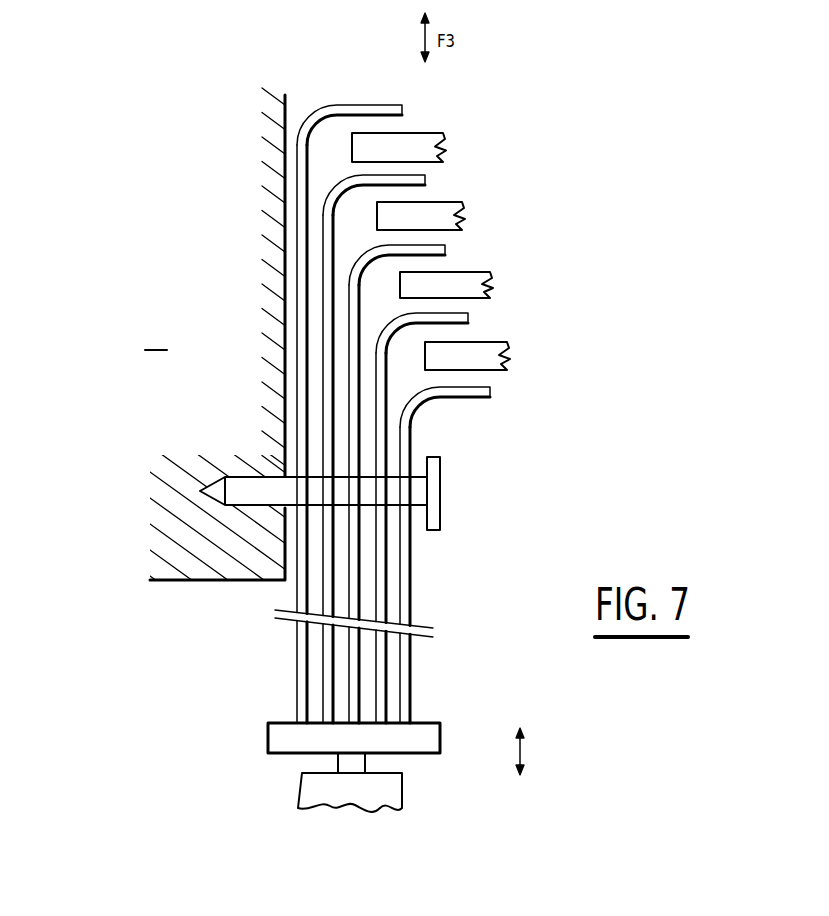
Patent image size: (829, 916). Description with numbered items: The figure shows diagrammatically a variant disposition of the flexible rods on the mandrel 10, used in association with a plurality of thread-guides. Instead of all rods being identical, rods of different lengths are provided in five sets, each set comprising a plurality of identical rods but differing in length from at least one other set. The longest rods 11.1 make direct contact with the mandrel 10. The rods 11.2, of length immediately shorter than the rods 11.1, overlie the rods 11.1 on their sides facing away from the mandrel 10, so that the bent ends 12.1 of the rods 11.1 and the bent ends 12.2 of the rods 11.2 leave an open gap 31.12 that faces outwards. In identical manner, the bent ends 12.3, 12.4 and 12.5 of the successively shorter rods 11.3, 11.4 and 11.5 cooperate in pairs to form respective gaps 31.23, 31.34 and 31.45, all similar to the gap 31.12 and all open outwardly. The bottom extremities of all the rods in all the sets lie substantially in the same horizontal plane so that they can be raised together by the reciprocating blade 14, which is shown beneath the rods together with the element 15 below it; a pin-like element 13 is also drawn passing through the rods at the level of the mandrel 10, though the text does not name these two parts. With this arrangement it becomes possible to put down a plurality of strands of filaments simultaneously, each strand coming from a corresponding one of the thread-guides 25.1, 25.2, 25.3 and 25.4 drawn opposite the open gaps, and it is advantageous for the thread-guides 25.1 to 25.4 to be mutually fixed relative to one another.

The mandrel 10 is at (220, 386).
The longest rods 11.1 is at (300, 389).
The rods of length immediately shorter 11.2 is at (351, 440).
The successively shorter rods 11.3 is at (362, 474).
The successively shorter rods 11.4 is at (461, 509).
The successively shorter rods 11.5 is at (475, 555).
The bent ends of rods 11.1 12.1 is at (360, 110).
The bent ends of rods 11.2 12.2 is at (423, 178).
The bent ends of rods 11.3 12.3 is at (440, 250).
The bent ends of rods 11.4 12.4 is at (465, 315).
The bent ends of rods 11.5 12.5 is at (480, 392).
The guide pin 13 is at (418, 495).
The reciprocating blade 14 is at (418, 730).
The actuator 15 is at (383, 795).
The thread-guide 25.1 is at (445, 145).
The thread-guide 25.2 is at (450, 217).
The thread-guide 25.3 is at (480, 290).
The thread-guide 25.4 is at (500, 363).
The gap 31.12 is at (380, 127).
The gap 31.23 is at (407, 193).
The gap 31.34 is at (420, 265).
The gap 31.45 is at (440, 332).